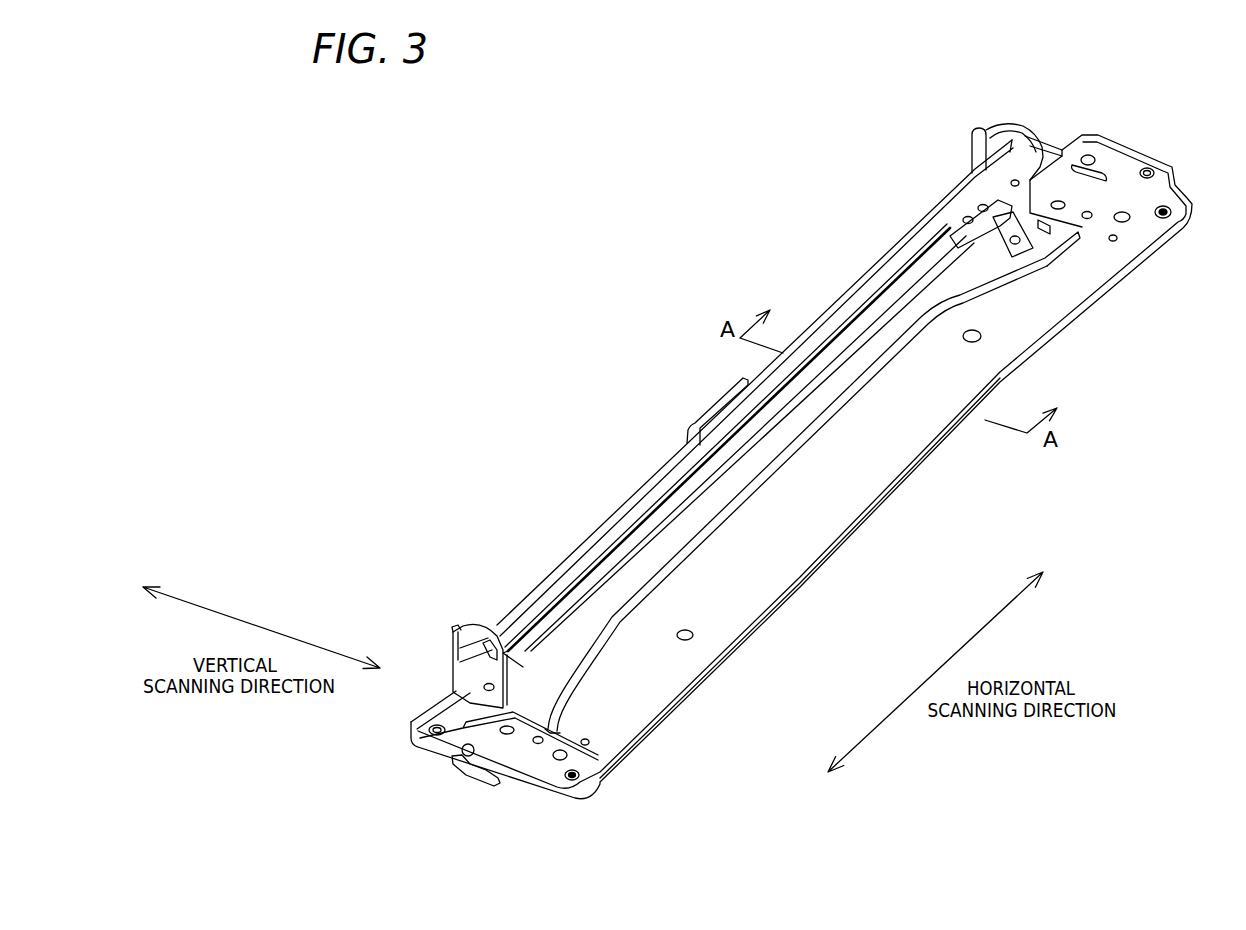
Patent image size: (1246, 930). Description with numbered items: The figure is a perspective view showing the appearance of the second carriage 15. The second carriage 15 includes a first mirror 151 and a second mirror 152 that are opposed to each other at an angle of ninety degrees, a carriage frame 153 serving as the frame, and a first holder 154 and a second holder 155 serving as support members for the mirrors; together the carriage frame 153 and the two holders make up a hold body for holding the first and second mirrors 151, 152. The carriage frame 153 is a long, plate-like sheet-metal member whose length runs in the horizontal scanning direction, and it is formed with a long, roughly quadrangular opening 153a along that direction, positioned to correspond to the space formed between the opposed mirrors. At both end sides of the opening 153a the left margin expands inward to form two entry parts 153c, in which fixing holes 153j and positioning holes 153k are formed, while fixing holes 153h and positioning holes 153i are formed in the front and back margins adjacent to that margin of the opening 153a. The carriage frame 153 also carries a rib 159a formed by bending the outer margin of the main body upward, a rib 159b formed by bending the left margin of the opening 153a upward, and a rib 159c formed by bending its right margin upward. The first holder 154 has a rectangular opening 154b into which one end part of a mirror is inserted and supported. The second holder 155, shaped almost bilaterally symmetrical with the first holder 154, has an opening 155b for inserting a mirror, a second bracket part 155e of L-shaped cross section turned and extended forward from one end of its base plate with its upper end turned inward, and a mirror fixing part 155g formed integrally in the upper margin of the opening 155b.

The second carriage 15 is at (642, 167).
The first mirror 151 is at (803, 333).
The second mirror 152 is at (695, 518).
The carriage frame 153 is at (935, 465).
The opening 153a is at (522, 720).
The entry parts 153c is at (970, 218).
The fixing holes 153h is at (548, 737).
The positioning holes 153i is at (470, 773).
The fixing holes 153j is at (980, 203).
The positioning holes 153k is at (966, 218).
The first holder 154 is at (457, 633).
The rectangular opening 154b is at (483, 643).
The second holder 155 is at (972, 132).
The opening 155b is at (1063, 124).
The second bracket part 155e is at (973, 227).
The mirror fixing part 155g is at (1017, 243).
The rib 159a is at (865, 528).
The rib 159b is at (723, 445).
The rib 159c is at (640, 587).